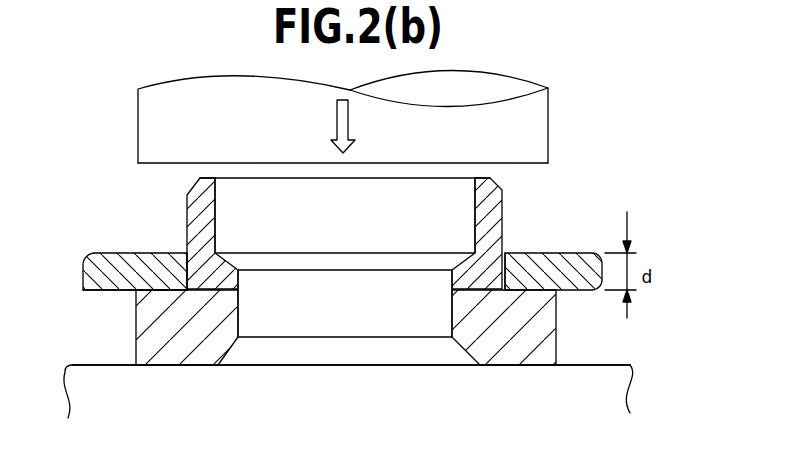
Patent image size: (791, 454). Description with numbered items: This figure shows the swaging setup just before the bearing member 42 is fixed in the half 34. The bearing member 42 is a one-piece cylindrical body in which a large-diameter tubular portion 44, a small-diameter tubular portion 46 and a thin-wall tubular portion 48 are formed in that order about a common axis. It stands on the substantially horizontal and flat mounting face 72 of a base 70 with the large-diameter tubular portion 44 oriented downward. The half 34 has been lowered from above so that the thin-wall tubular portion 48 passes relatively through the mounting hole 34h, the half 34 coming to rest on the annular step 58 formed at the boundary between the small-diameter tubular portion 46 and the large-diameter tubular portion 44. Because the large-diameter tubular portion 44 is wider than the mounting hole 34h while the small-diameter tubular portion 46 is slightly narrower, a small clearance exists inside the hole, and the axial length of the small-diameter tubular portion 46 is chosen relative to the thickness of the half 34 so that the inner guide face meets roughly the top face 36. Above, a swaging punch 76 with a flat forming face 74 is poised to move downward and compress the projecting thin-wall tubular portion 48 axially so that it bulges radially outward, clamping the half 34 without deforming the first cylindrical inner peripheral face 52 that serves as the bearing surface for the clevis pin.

The swaging punch 76 is at (160, 128).
The forming face 74 is at (540, 164).
The bearing member 42 is at (297, 218).
The thin-wall tubular portion 48 is at (198, 204).
The small-diameter tubular portion 46 is at (487, 279).
The half 34 is at (103, 275).
The mounting hole 34h is at (195, 256).
The annular step 58 is at (132, 276).
The top face 36 is at (560, 253).
The large-diameter tubular portion 44 is at (522, 320).
The first cylindrical inner peripheral face 52 is at (450, 308).
The base 70 is at (600, 386).
The mounting face 72 is at (90, 365).